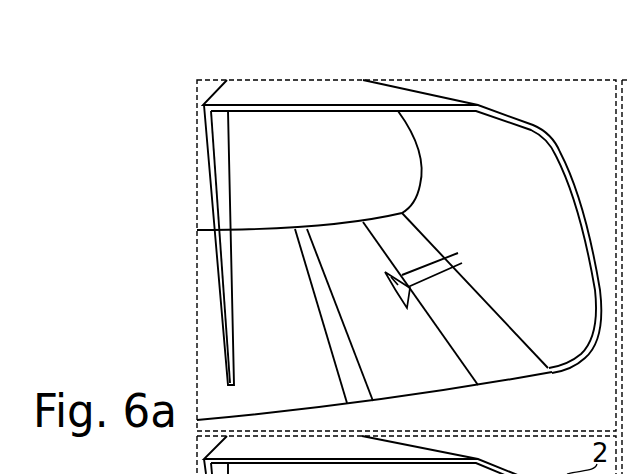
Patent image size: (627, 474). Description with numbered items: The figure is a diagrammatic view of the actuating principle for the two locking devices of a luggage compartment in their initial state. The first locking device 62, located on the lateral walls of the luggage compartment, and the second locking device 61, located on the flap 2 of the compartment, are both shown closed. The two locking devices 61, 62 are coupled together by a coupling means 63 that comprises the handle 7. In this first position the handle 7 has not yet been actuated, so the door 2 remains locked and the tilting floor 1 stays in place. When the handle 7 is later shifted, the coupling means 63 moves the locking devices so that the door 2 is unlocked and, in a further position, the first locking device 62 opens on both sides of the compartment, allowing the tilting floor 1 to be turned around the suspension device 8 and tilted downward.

The tilting floor 1 is at (480, 333).
The flap 2 is at (532, 128).
The handle 7 is at (384, 272).
The suspension device 8 is at (332, 297).
The second locking device 61 is at (462, 263).
The first locking device 62 is at (363, 222).
The coupling means 63 is at (425, 316).